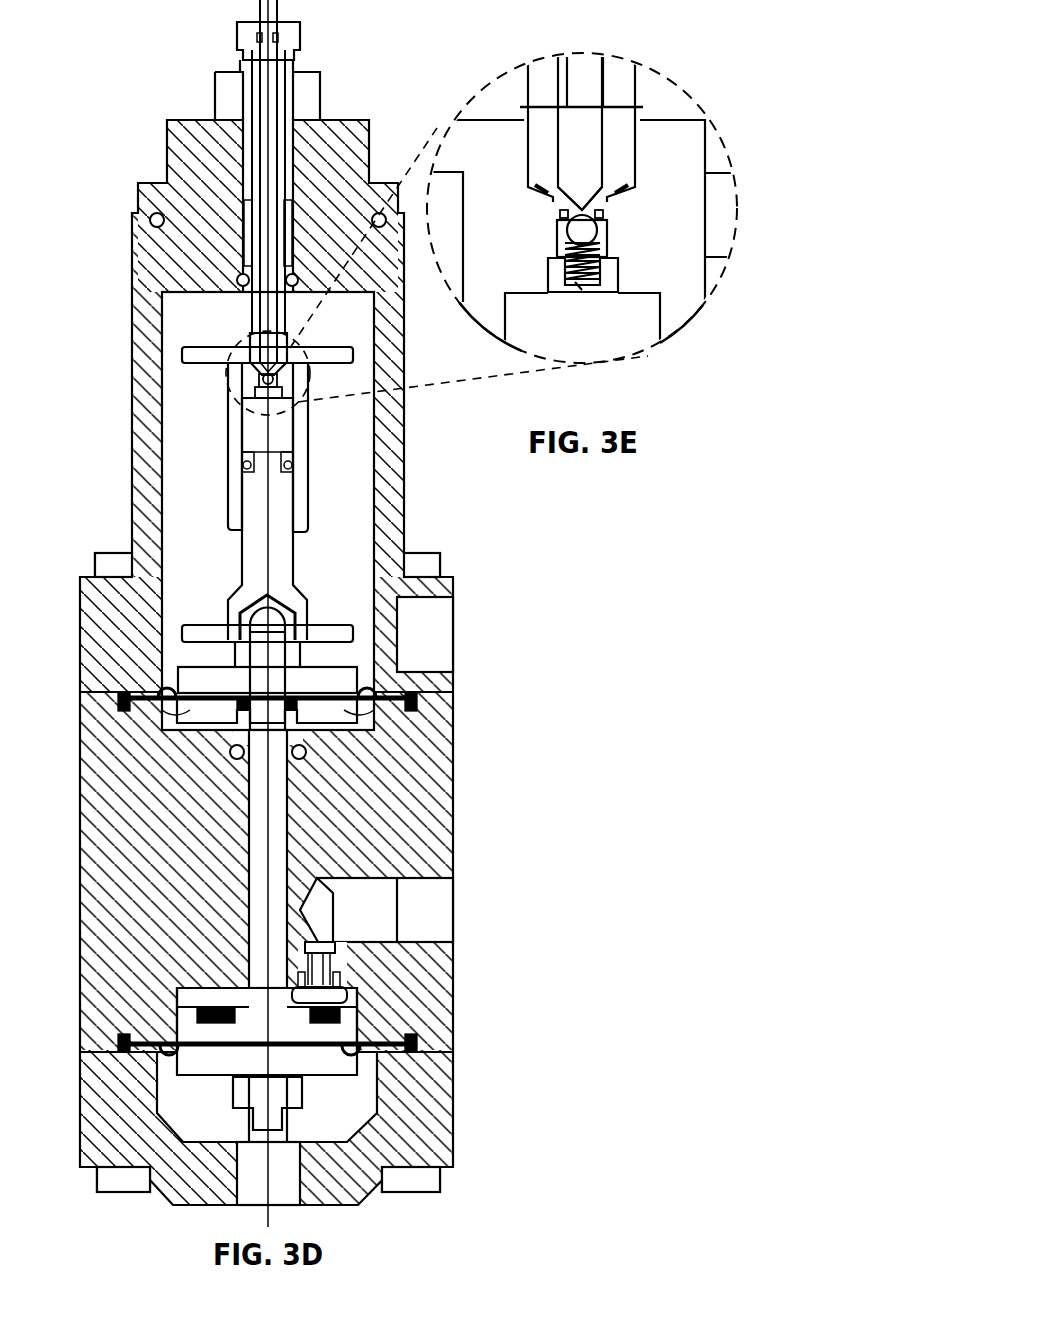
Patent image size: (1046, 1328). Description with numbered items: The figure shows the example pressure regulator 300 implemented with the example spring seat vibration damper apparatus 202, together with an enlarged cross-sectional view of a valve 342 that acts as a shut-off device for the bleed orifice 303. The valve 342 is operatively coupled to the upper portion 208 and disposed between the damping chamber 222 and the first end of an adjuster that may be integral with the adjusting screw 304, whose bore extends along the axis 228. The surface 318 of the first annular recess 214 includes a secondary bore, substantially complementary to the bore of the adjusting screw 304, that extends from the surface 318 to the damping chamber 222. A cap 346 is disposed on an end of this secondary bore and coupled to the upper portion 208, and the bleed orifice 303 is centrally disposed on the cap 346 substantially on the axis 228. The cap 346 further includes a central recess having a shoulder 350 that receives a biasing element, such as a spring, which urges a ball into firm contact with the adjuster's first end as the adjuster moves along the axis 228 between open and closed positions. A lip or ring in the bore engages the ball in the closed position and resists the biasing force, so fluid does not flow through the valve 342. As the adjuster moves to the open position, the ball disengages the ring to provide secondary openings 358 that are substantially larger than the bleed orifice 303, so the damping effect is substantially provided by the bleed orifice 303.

In FIG. 3D, the pressure regulator 300 is at (128, 55).
In FIG. 3D, the spring seat vibration damper apparatus 202 is at (185, 403).
In FIG. 3D, the upper portion 208 is at (225, 503).
In FIG. 3E, the upper portion 208 is at (627, 280).
In FIG. 3D, the first annular recess 214 is at (253, 367).
In FIG. 3D, the damping chamber 222 is at (250, 420).
In FIG. 3D, the axis 228 is at (263, 574).
In FIG. 3D, the bleed orifice 303 is at (319, 972).
In FIG. 3D, the adjusting screw 304 is at (295, 62).
In FIG. 3D, the surface 318 is at (300, 365).
In FIG. 3D, the valve 342 is at (292, 389).
In FIG. 3E, the valve 342 is at (703, 258).
In FIG. 3D, the cap 346 is at (278, 400).
In FIG. 3E, the shoulder 350 is at (590, 285).
In FIG. 3E, the secondary openings 358 is at (703, 203).